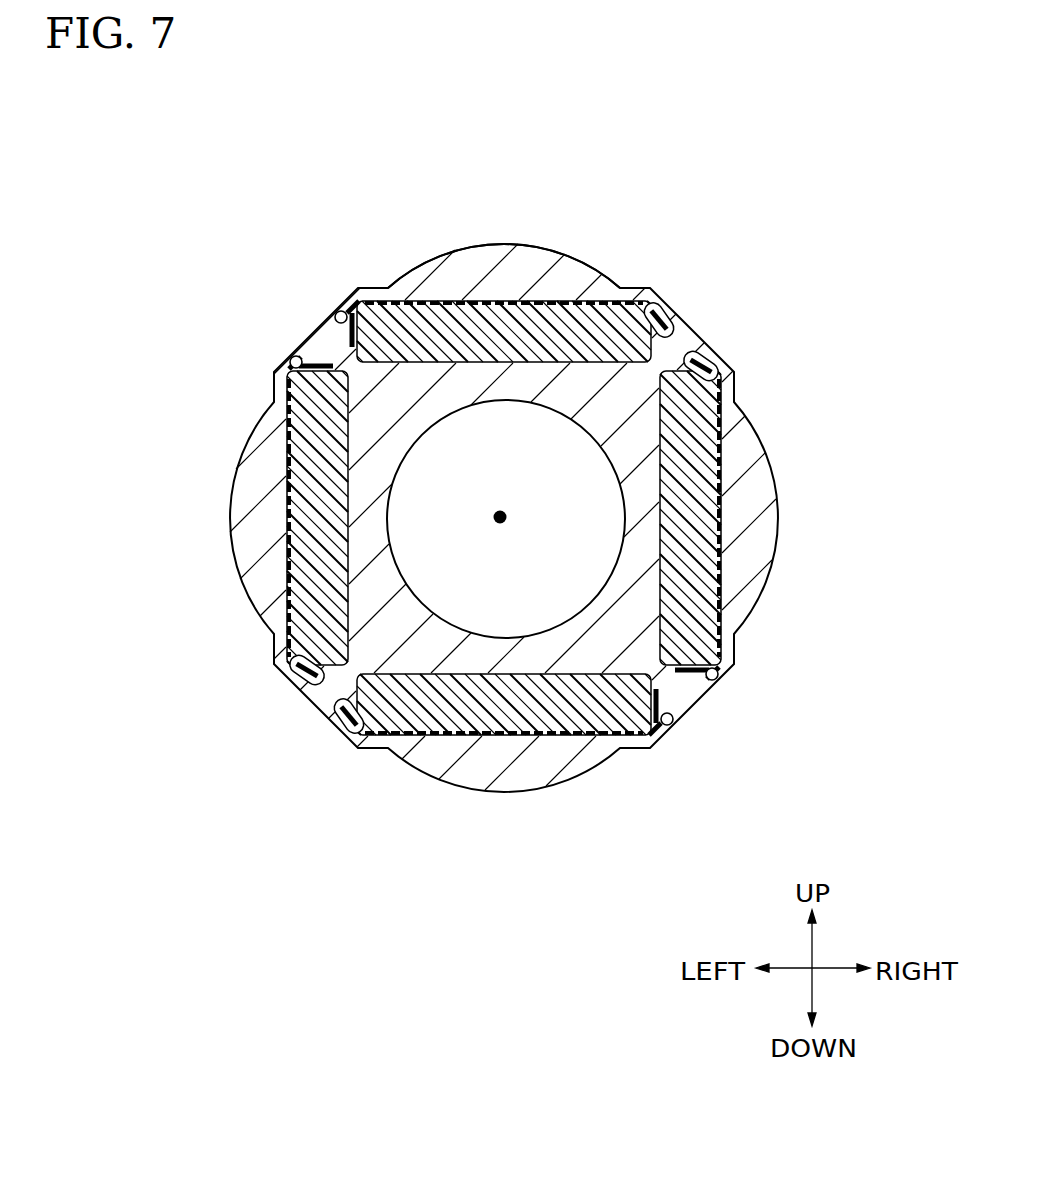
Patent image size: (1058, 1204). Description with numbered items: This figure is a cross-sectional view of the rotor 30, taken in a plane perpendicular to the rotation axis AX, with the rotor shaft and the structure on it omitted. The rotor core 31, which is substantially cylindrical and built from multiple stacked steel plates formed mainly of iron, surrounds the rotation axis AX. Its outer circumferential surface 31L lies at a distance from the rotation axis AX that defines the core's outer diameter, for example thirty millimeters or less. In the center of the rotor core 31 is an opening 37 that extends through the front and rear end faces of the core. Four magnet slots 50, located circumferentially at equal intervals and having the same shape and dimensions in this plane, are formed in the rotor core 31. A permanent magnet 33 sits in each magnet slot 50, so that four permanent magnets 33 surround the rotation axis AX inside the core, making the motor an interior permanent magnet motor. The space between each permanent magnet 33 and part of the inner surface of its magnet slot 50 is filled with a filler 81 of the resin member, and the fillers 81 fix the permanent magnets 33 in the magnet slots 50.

The rotor 30 is at (522, 509).
The rotor core 31 is at (545, 775).
The outer circumferential surface 31L is at (457, 249).
The permanent magnet 33 is at (498, 322).
The opening 37 is at (412, 468).
The magnet slot 50 is at (338, 312).
The filler 81 is at (660, 313).
The rotation axis AX is at (505, 516).